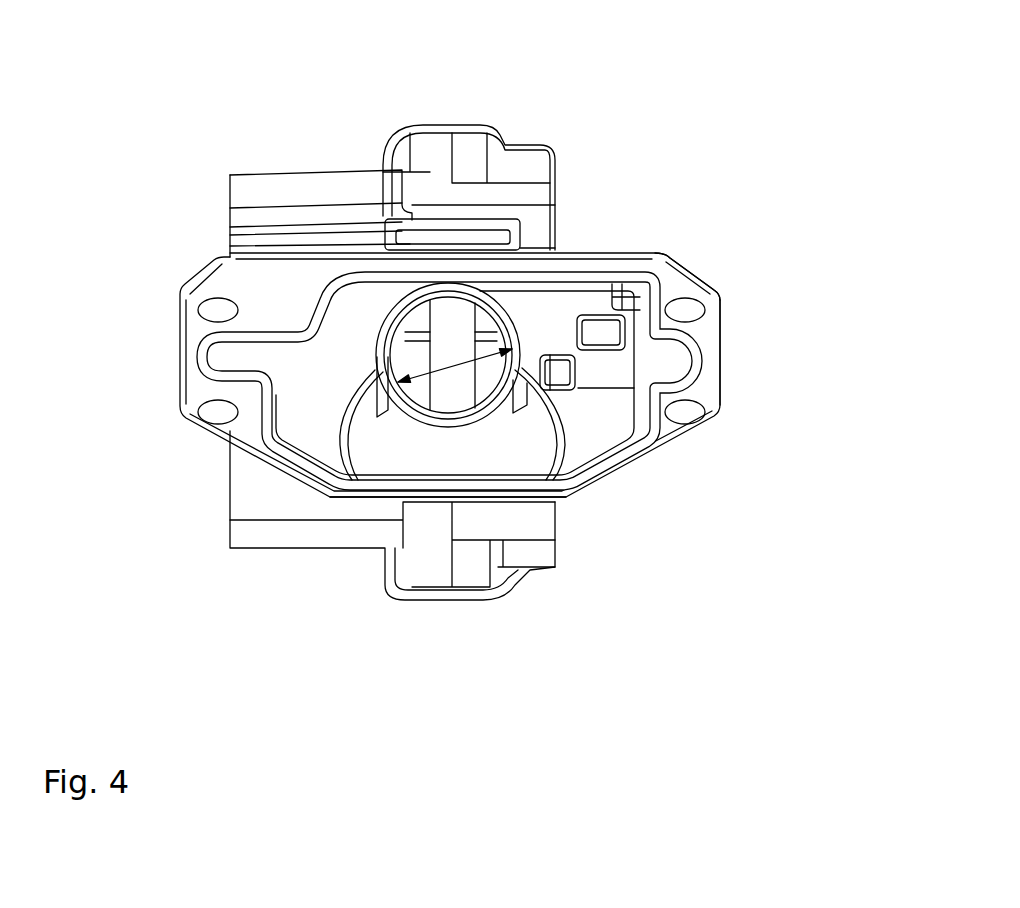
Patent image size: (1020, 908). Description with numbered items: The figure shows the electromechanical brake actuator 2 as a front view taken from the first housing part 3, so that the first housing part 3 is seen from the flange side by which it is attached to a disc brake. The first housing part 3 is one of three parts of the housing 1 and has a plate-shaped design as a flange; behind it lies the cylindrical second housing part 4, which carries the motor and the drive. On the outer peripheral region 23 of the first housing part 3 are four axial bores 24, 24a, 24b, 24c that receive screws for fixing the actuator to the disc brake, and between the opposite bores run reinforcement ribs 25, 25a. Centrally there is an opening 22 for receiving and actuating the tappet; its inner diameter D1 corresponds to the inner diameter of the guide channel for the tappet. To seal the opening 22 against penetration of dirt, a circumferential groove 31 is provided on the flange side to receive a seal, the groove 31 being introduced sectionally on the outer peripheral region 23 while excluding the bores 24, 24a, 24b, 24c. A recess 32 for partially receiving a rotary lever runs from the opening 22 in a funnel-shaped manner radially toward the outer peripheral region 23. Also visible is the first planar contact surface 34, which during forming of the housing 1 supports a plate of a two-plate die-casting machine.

The housing 1 is at (153, 137).
The electromechanical brake actuator 2 is at (260, 612).
The first housing part 3 is at (198, 293).
The second housing part 4 is at (262, 177).
The opening 22 is at (487, 320).
The outer peripheral region 23 is at (590, 490).
The axial bore 24 is at (707, 412).
The axial bore 24a is at (707, 308).
The axial bore 24b is at (195, 293).
The axial bore 24c is at (200, 412).
The reinforcement rib 25 is at (720, 290).
The reinforcement rib 25a is at (723, 383).
The circumferential groove 31 is at (655, 437).
The recess 32 is at (425, 462).
The first planar contact surface 34 is at (677, 274).
The inner diameter D1 is at (408, 372).